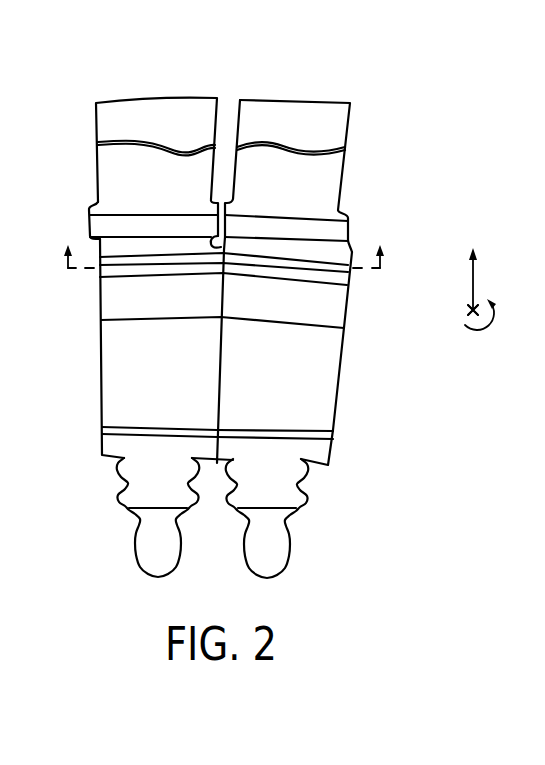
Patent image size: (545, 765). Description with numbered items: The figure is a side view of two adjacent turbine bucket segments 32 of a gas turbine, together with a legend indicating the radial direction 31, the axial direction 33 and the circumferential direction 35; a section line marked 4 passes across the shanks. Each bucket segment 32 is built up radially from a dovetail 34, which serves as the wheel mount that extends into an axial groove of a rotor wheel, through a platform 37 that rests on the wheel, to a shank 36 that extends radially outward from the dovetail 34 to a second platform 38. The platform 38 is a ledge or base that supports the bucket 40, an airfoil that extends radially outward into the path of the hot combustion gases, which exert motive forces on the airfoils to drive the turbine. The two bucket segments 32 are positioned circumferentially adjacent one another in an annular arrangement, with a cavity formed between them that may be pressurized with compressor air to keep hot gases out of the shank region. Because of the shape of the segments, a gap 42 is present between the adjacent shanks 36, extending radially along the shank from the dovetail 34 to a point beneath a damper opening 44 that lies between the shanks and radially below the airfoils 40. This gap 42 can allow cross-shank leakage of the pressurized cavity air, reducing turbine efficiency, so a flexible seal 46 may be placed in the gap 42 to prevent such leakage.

The radial direction 31 is at (470, 283).
The turbine bucket segment 32 is at (82, 128).
The axial direction 33 is at (468, 313).
The dovetail 34 is at (138, 549).
The circumferential direction 35 is at (489, 327).
The shank 36 is at (99, 348).
The platform 37 is at (102, 447).
The platform 38 is at (96, 212).
The bucket 40 is at (153, 98).
The gap 42 is at (217, 463).
The damper opening 44 is at (223, 237).
The flexible seal 46 is at (346, 303).
The section line 4- 4 is at (225, 248).